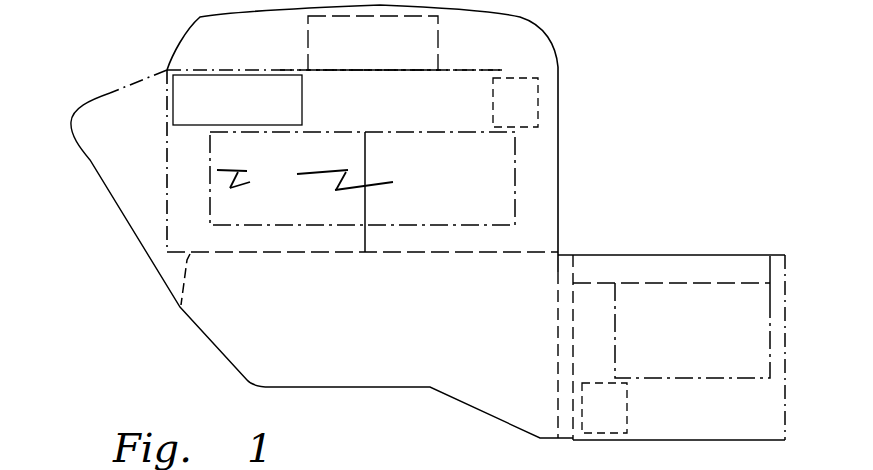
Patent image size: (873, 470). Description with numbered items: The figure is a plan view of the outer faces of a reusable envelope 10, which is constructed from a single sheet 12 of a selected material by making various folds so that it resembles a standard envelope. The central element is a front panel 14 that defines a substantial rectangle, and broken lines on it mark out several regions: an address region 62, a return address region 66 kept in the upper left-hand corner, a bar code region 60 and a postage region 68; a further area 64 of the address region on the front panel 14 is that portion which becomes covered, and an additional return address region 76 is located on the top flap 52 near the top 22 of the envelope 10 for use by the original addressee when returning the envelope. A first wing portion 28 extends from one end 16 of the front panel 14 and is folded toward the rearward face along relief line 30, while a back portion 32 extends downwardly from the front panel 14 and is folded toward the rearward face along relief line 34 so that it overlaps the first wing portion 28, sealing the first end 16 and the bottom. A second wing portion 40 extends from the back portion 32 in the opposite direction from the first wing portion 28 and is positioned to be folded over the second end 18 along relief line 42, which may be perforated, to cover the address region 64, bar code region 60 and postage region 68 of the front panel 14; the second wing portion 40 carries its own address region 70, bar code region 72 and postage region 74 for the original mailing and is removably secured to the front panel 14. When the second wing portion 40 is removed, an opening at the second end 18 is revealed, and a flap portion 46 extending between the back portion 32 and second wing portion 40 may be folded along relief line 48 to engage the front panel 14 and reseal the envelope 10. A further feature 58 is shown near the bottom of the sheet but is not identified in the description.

The reusable envelope 10 is at (658, 96).
The single sheet 12 is at (172, 268).
The front panel 14 is at (542, 183).
The first end 16 is at (183, 157).
The second end 18 is at (557, 221).
The top 22 is at (517, 72).
The first wing portion 28 is at (133, 144).
The relief line 30 is at (167, 212).
The back portion 32 is at (356, 339).
The relief line 34 is at (178, 320).
The second wing portion 40 is at (706, 419).
The relief line 42 is at (572, 384).
The flap portion 46 is at (563, 322).
The relief line 48 is at (545, 437).
The top flap 52 is at (498, 54).
The support 58 is at (318, 464).
The bar code region 60 is at (469, 257).
The address region 62 is at (362, 178).
The address region 64 is at (459, 192).
The return address region 66 is at (236, 115).
The postage region 68 is at (535, 119).
The address region 70 is at (683, 337).
The bar code region 72 is at (683, 281).
The postage region 74 is at (616, 419).
The additional return address region 76 is at (371, 54).